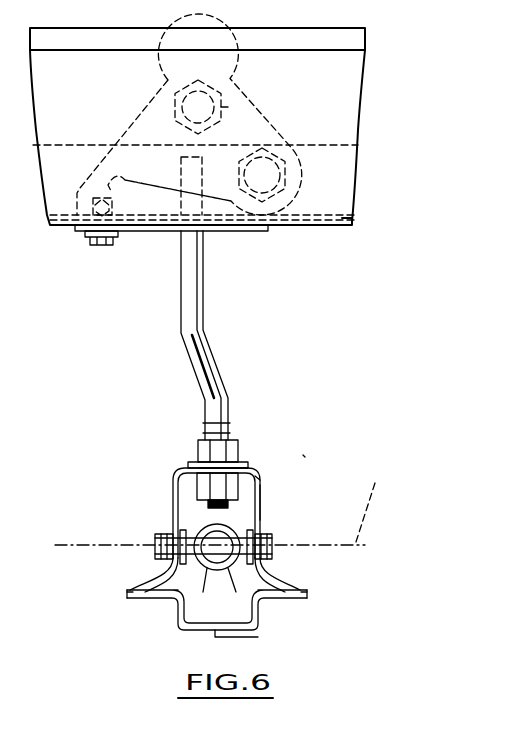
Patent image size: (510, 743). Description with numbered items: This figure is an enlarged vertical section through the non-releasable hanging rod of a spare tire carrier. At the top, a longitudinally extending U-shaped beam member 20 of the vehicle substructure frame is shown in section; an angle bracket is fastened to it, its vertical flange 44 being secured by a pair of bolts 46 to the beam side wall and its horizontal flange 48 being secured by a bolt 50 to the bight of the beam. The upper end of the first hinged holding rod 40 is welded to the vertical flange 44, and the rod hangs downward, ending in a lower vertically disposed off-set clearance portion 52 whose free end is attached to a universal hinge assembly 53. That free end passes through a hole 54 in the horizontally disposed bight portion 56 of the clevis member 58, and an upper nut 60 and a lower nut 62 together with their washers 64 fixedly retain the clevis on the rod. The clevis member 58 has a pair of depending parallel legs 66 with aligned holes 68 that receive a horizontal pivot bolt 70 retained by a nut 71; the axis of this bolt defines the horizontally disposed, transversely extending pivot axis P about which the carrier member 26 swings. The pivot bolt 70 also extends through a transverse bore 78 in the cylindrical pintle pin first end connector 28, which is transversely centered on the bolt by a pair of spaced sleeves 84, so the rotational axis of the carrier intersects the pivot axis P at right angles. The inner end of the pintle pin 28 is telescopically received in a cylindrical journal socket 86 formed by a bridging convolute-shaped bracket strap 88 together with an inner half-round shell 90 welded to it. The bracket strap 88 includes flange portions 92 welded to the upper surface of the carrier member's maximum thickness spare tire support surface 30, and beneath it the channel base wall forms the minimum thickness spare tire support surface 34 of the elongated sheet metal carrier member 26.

The U-shaped beam member 20 is at (357, 180).
The angle bracket vertical flange 44 is at (143, 110).
The bolts 46 is at (280, 148).
The bolt 50 is at (113, 196).
The horizontal flange 48 is at (153, 231).
The first hinged holding rod 40 is at (206, 264).
The off-set clearance portion 52 is at (229, 400).
The upper nut 60 is at (198, 448).
The washers 64 is at (188, 465).
The lower nut 62 is at (197, 486).
The depending parallel legs 66 is at (173, 496).
The bight portion 56 is at (250, 468).
The hole 54 is at (262, 480).
The clevis member 58 is at (261, 494).
The universal hinge assembly 53 is at (303, 456).
The pivot axis P is at (369, 502).
The bracket strap 88 is at (233, 527).
The pintle pin first end connector 28 is at (209, 570).
The transverse bore 78 is at (222, 572).
The spaced sleeves 84 is at (182, 535).
The aligned holes 68 is at (157, 543).
The nut 71 is at (150, 576).
The pivot bolt 70 is at (280, 553).
The cylindrical journal socket 86 is at (256, 568).
The carrier member 26 is at (178, 626).
The spare tire support surface 30 is at (146, 600).
The inner half-round shell 90 is at (262, 606).
The flange portions 92 is at (127, 593).
The minimum thickness spare tire support surface 34 is at (230, 637).